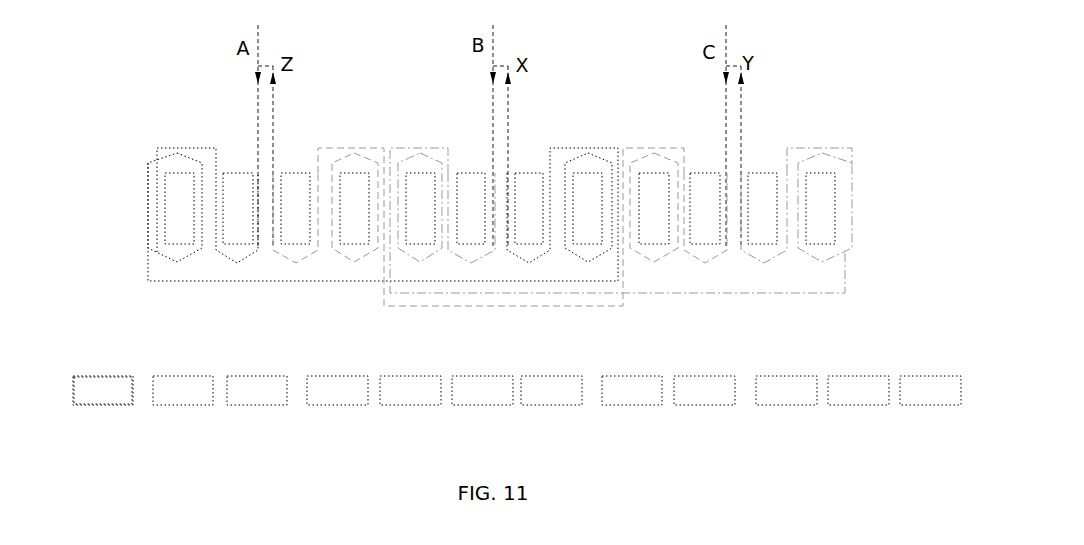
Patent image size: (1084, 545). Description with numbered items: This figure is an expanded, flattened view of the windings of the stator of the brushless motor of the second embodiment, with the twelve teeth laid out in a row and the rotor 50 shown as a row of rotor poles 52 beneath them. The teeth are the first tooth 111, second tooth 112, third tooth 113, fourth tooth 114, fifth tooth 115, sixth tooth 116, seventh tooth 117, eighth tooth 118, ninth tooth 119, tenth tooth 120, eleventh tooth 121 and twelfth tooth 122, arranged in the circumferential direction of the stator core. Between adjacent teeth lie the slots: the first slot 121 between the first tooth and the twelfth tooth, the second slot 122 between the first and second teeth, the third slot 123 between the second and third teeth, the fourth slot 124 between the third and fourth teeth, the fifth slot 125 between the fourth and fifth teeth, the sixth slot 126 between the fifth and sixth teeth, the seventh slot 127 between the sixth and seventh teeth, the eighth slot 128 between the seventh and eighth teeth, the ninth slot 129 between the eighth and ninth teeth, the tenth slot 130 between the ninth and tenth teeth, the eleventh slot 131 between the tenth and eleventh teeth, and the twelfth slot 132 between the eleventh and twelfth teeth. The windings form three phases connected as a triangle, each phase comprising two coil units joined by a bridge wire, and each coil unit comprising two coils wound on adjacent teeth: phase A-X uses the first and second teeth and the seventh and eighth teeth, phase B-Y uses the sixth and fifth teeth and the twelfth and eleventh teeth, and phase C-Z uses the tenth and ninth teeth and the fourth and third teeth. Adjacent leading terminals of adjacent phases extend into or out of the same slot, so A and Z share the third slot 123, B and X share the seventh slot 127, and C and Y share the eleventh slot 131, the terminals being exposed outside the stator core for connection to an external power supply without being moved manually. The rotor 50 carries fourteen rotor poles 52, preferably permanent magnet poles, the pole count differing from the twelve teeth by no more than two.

The first tooth 111 is at (175, 186).
The second tooth 112 is at (233, 186).
The third tooth 113 is at (292, 186).
The fourth tooth 114 is at (350, 186).
The fifth tooth 115 is at (416, 186).
The sixth tooth 116 is at (467, 186).
The seventh tooth 117 is at (525, 186).
The eighth tooth 118 is at (584, 186).
The ninth tooth 119 is at (649, 186).
The tenth tooth 120 is at (701, 186).
The eleventh tooth / first slot 121 is at (759, 186).
The twelfth tooth / second slot 122 is at (818, 186).
The third slot 123 is at (267, 244).
The fourth slot 124 is at (327, 244).
The fifth slot 125 is at (383, 258).
The sixth slot 126 is at (446, 252).
The seventh slot 127 is at (501, 252).
The eighth slot 128 is at (561, 255).
The ninth slot 129 is at (624, 257).
The tenth slot 130 is at (680, 262).
The eleventh slot 131 is at (733, 259).
The twelfth slot 132 is at (793, 257).
The rotor 50 is at (70, 408).
The rotor poles 52 is at (105, 392).